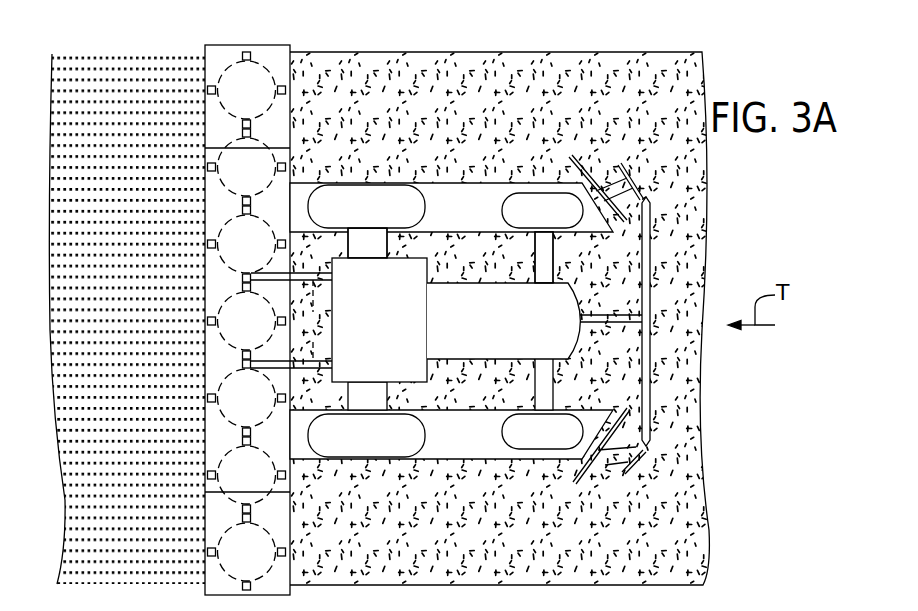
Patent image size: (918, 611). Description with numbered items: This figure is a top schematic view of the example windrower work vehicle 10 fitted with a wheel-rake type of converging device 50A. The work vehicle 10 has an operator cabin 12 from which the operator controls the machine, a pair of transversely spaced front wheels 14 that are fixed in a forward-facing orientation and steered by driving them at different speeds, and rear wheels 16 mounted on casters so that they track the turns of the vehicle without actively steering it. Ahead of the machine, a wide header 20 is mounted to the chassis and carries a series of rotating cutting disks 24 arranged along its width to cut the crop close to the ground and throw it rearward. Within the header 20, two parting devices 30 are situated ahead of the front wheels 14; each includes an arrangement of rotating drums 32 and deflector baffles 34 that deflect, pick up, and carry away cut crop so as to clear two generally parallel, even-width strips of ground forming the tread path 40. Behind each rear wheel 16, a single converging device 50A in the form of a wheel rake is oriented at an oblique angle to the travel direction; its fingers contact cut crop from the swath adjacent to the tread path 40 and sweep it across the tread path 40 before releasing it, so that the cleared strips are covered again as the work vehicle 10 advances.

The work vehicle 10 is at (533, 279).
The operator cabin 12 is at (379, 320).
The front wheels 14 is at (367, 210).
The rear wheels 16 is at (546, 210).
The header 20 is at (222, 57).
The cutting disks 24 is at (290, 227).
The parting devices 30 is at (258, 195).
The rotating drums 32 is at (312, 320).
The deflector baffles 34 is at (258, 195).
The tread path 40 is at (470, 210).
The converging device 50A is at (672, 319).